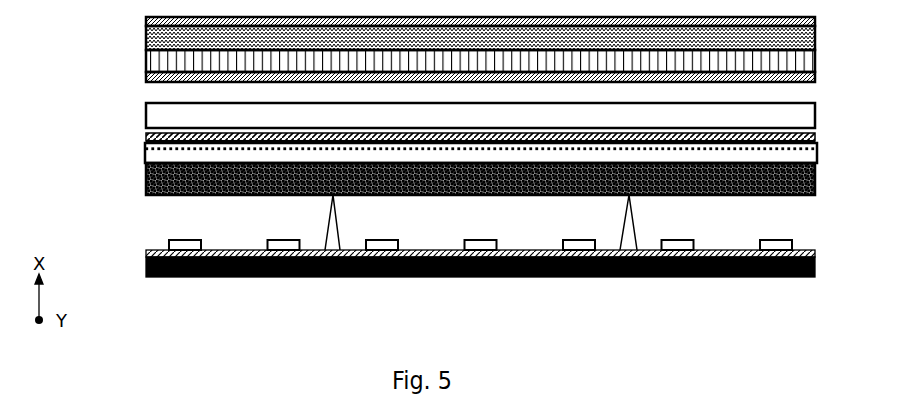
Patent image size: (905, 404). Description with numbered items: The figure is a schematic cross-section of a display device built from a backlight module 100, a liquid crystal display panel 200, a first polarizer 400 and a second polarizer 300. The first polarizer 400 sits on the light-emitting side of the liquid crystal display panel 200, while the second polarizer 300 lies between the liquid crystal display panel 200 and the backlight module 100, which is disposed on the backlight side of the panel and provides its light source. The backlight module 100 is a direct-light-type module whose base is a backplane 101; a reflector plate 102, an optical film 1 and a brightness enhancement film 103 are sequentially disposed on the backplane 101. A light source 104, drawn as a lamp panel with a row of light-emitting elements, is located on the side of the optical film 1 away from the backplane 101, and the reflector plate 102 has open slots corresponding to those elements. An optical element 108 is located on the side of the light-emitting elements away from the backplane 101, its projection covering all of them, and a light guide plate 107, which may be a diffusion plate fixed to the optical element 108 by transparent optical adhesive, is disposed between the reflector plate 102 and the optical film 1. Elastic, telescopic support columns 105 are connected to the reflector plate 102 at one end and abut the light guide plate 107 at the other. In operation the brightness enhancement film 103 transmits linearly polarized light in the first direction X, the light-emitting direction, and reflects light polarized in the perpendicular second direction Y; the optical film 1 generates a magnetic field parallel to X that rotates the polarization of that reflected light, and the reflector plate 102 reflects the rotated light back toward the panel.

The first polarizer 400 is at (144, 21).
The liquid crystal display panel 200 is at (144, 35).
The second polarizer 300 is at (144, 76).
The backlight module 100 is at (60, 105).
The optical element 108 is at (144, 117).
The brightness enhancement film 103 is at (144, 137).
The optical film 1 is at (144, 153).
The light guide plate 107 is at (144, 186).
The support columns 105 is at (323, 247).
The light source 104 is at (180, 240).
The reflector plate 102 is at (144, 253).
The backplane 101 is at (144, 265).